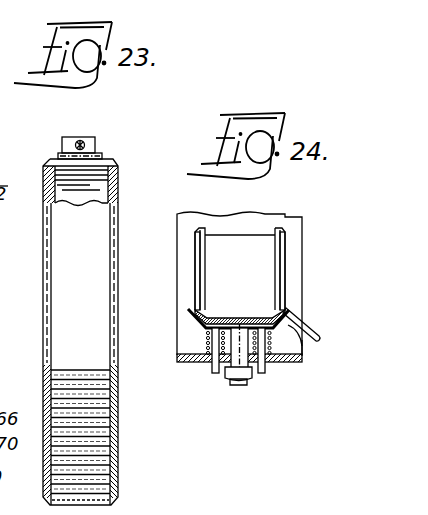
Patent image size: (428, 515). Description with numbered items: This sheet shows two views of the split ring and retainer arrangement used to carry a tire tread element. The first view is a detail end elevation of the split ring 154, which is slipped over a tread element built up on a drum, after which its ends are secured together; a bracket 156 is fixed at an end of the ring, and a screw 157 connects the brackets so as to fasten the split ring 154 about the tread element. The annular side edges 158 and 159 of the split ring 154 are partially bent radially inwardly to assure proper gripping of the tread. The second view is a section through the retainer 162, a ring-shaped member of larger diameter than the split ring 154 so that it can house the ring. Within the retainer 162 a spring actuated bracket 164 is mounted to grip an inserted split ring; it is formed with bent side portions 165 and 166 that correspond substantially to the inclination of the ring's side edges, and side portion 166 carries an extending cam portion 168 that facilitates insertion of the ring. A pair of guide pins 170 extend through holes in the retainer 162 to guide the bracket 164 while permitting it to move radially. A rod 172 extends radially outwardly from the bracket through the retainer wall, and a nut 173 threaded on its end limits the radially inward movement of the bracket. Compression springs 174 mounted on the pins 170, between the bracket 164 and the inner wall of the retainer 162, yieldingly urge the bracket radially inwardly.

In FIG. 23, the split ring 154 is at (97, 303).
In FIG. 24, the split ring 154 is at (256, 275).
In FIG. 23, the bracket 156 is at (101, 148).
In FIG. 23, the screw 157 is at (80, 141).
In FIG. 23, the annular side edge 158 is at (45, 167).
In FIG. 24, the annular side edge 158 is at (197, 267).
In FIG. 23, the annular side edge 159 is at (118, 164).
In FIG. 24, the annular side edge 159 is at (286, 273).
In FIG. 24, the retainer 162 is at (281, 220).
In FIG. 24, the spring actuated bracket 164 is at (203, 328).
In FIG. 24, the bent side portion 165 is at (196, 321).
In FIG. 24, the bent side portion 166 is at (304, 350).
In FIG. 24, the cam portion 168 is at (316, 336).
In FIG. 24, the guide pin 170 is at (214, 374).
In FIG. 24, the rod 172 is at (238, 329).
In FIG. 24, the nut 173 is at (233, 384).
In FIG. 24, the compression spring 174 is at (192, 363).